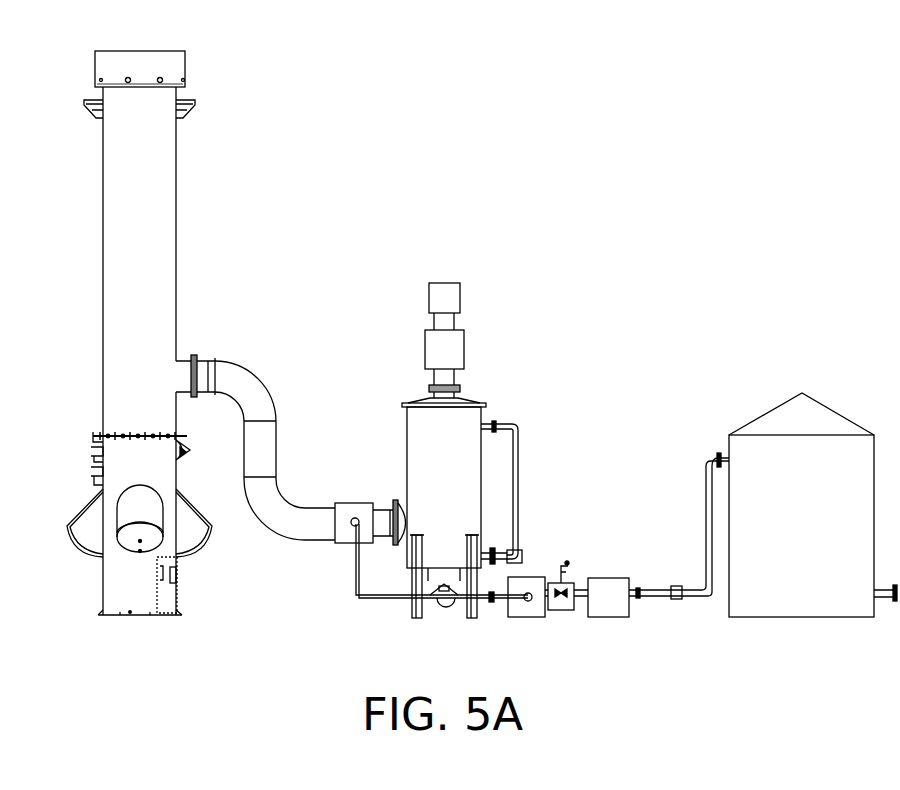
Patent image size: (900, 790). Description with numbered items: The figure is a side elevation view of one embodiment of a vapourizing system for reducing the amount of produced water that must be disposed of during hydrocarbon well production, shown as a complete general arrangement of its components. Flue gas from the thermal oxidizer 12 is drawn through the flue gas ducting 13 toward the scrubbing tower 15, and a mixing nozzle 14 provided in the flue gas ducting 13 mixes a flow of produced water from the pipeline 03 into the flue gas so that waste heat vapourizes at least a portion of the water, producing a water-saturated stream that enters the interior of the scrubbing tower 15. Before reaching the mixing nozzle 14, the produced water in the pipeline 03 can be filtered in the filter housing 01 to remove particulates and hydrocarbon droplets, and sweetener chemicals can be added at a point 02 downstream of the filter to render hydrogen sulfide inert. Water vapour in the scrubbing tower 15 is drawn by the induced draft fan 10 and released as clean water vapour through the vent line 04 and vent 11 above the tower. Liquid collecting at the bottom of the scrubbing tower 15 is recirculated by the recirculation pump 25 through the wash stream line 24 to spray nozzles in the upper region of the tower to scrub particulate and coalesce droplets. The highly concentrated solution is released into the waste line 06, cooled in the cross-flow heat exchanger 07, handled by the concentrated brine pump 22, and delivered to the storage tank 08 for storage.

The filter housing 01 is at (606, 578).
The sweetener addition point 02 is at (563, 612).
The pipeline 03 is at (376, 600).
The vent line 04 is at (444, 320).
The waste line 06 is at (448, 608).
The cross-flow heat exchanger 07 is at (525, 618).
The storage tank 08 is at (813, 505).
The induced draft fan 10 is at (437, 348).
The vent 11 is at (447, 283).
The thermal oxidizer 12 is at (160, 186).
The flue gas ducting 13 is at (243, 385).
The mixing nozzle 14 is at (345, 543).
The scrubbing tower 15 is at (406, 449).
The concentrated brine pump 22 is at (681, 600).
The wash stream line 24 is at (518, 451).
The recirculation pump 25 is at (523, 556).